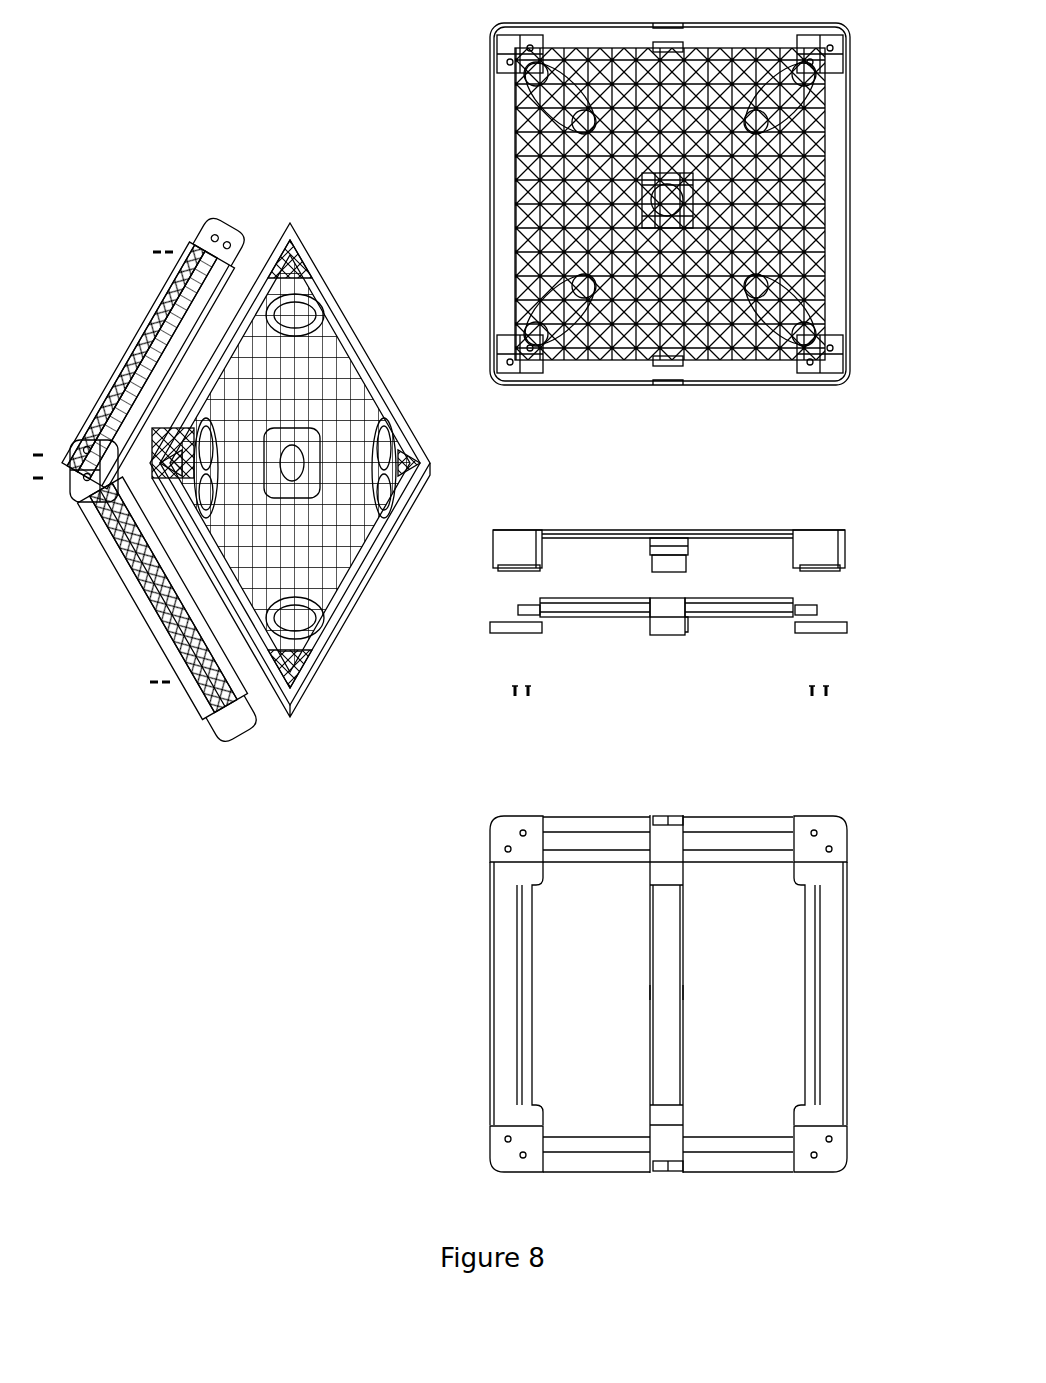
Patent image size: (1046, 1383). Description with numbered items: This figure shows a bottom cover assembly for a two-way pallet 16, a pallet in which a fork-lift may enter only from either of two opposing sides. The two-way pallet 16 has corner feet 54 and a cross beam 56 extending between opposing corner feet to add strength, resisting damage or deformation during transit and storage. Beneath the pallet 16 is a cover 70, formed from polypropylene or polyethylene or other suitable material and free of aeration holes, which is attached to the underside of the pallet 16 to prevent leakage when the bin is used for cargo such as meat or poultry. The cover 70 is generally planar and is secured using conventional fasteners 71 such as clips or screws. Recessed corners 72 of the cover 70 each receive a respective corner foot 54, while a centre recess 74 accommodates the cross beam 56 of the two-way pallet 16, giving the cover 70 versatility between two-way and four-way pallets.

The two-way pallet 16 is at (367, 327).
The corner foot 54 is at (262, 242).
The cross beam 56 is at (663, 547).
The cover 70 is at (105, 345).
The fasteners 71 is at (540, 700).
The recessed corners 72 is at (207, 235).
The centre recess 74 is at (667, 610).